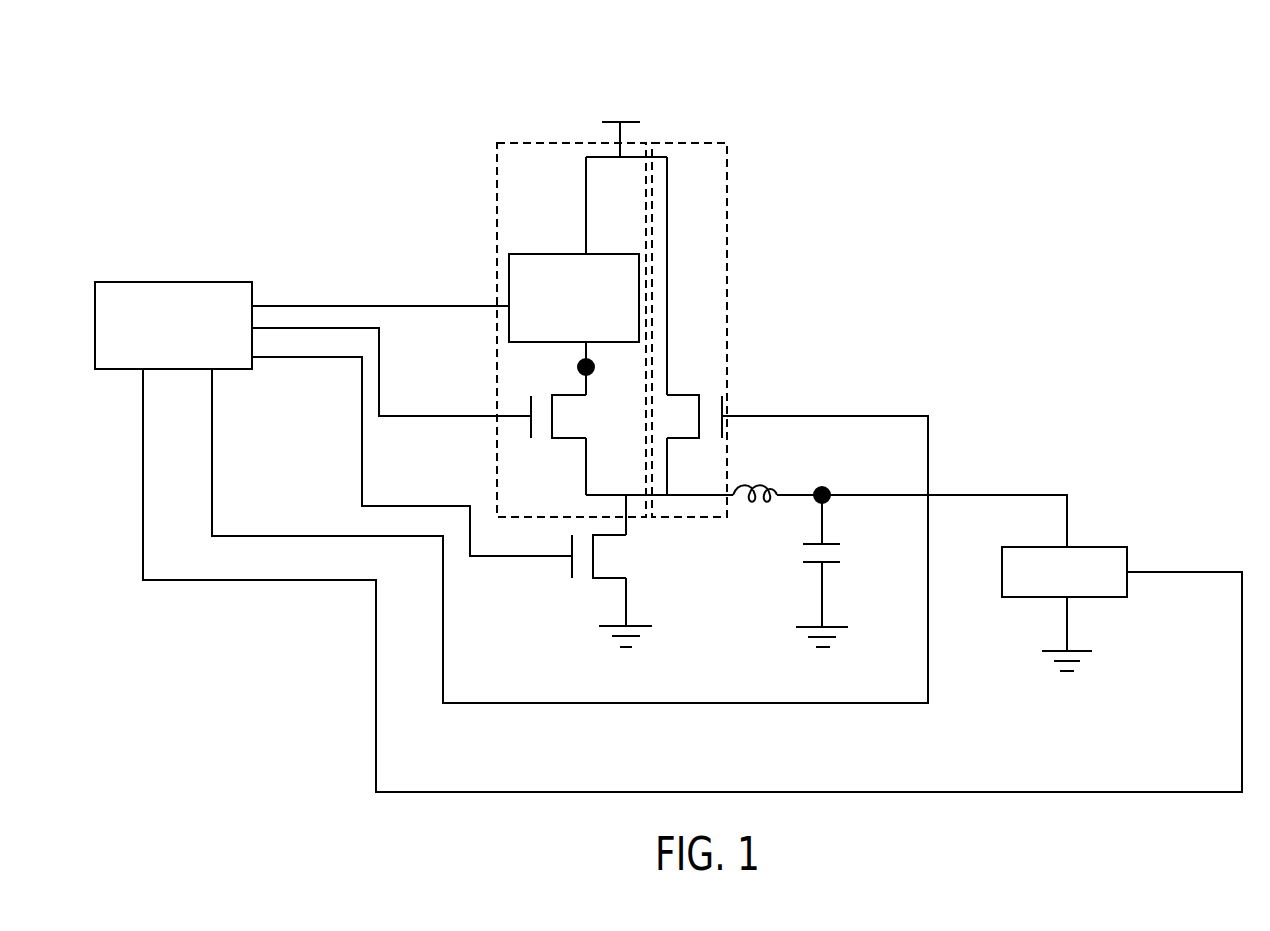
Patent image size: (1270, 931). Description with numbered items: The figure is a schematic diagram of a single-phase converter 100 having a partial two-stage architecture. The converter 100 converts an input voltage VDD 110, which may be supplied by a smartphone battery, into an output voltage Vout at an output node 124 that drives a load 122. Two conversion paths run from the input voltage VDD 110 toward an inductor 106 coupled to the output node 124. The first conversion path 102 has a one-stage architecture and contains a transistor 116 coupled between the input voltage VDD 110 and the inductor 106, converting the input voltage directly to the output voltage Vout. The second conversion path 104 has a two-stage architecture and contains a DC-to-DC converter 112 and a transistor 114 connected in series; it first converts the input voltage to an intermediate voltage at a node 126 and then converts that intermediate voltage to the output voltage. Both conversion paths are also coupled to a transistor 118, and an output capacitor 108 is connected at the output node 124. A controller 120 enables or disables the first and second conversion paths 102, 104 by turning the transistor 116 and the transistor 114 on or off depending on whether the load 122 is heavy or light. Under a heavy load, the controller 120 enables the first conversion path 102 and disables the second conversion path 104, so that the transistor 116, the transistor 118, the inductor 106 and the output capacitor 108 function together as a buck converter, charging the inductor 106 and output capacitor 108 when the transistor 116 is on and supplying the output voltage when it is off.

The single-phase converter 100 is at (752, 102).
The first conversion path 102 is at (730, 212).
The second conversion path 104 is at (492, 172).
The inductor 106 is at (755, 479).
The output capacitor 108 is at (838, 557).
The input voltage VDD 110 is at (637, 125).
The DC-to-DC converter 112 is at (545, 253).
The transistor 114 is at (564, 416).
The transistor 116 is at (690, 416).
The transistor 118 is at (612, 556).
The controller 120 is at (173, 281).
The load 122 is at (1100, 546).
The output node 124 is at (855, 492).
The node 126 is at (568, 367).